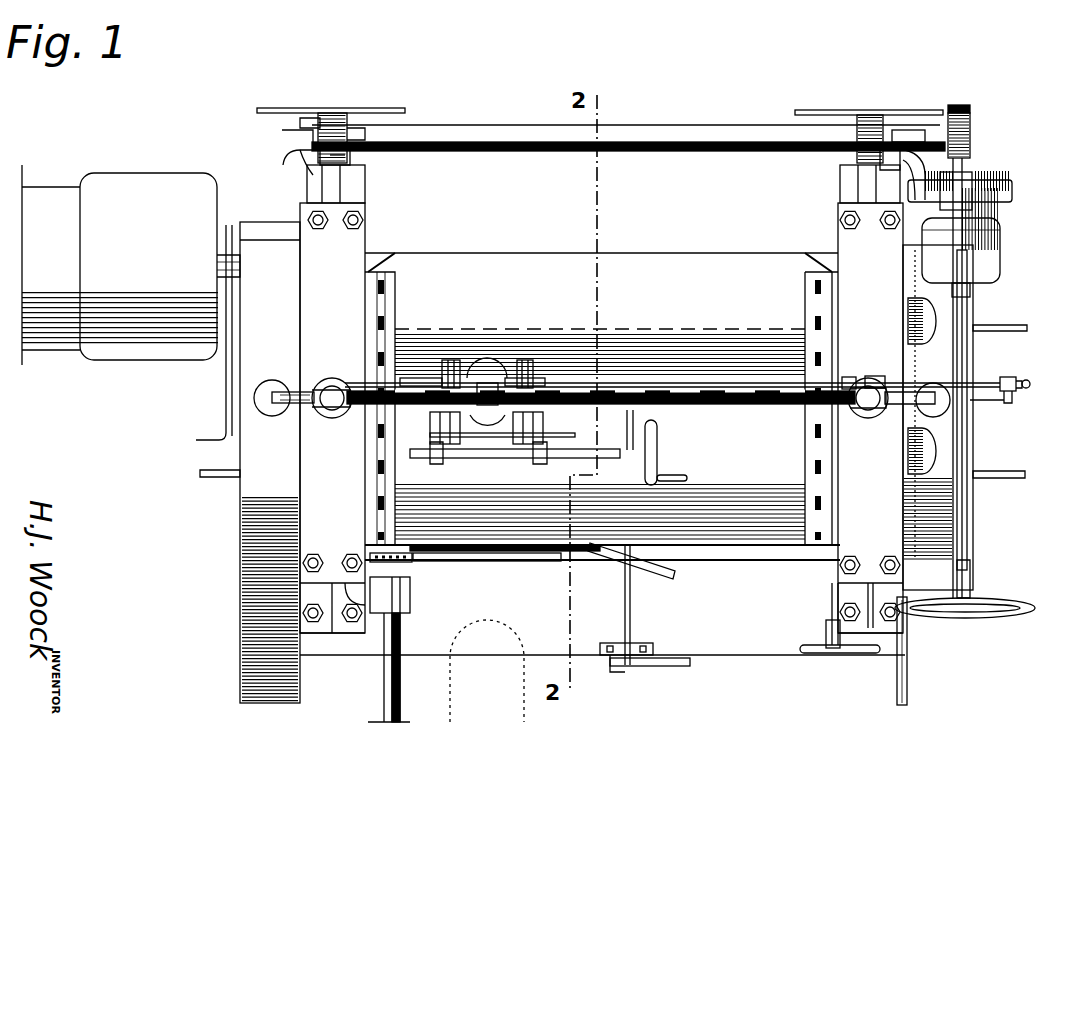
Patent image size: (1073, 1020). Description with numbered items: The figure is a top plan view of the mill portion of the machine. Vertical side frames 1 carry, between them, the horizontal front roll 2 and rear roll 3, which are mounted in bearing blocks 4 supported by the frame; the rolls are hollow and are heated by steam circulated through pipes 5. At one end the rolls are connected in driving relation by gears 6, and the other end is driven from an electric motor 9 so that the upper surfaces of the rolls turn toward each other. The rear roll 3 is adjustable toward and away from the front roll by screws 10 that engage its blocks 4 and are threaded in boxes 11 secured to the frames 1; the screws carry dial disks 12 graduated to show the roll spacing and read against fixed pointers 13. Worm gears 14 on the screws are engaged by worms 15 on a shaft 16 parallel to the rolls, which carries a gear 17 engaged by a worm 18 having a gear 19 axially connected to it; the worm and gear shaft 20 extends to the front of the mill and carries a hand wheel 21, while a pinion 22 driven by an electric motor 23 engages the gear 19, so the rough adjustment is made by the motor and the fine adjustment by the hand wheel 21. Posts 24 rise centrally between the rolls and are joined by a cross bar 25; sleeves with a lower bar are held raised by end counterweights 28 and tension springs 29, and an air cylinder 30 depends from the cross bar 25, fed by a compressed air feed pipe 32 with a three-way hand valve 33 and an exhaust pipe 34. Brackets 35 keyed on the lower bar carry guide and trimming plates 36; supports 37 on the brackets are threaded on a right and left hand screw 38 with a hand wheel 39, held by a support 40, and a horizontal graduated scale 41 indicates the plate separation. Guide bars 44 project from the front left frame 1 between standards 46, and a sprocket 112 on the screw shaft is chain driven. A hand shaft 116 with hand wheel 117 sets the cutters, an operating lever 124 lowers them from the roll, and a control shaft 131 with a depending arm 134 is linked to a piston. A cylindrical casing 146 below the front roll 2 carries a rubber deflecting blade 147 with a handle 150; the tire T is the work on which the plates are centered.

The vertical side frames 1 is at (308, 512).
The front roll 2 is at (727, 548).
The rear roll 3 is at (655, 265).
The bearing blocks 4 is at (362, 292).
The pipes 5 is at (197, 473).
The gears 6 is at (908, 325).
The electric motor 9 is at (135, 190).
The screws 10 is at (352, 162).
The boxes 11 is at (355, 195).
The dial disks 12 is at (278, 108).
The fixed pointers 13 is at (329, 113).
The worm gears 14 is at (352, 131).
The worms 15 is at (283, 150).
The shaft 16 is at (455, 142).
The gear 17 is at (959, 105).
The worm 18 is at (973, 135).
The gear 19 is at (1010, 185).
The worm and gear shaft 20 is at (967, 450).
The hand wheel 21 is at (987, 620).
The pinion 22 is at (973, 178).
The electric motor 23 is at (998, 267).
The posts 24 is at (333, 412).
The cross bar 25 is at (712, 405).
The end counterweights 28 is at (271, 416).
The tension springs 29 is at (370, 383).
The air cylinder 30 is at (478, 383).
The compressed air feed pipe 32 is at (846, 377).
The three-way hand valve 33 is at (1017, 387).
The exhaust pipe 34 is at (1027, 373).
The brackets 35 is at (440, 378).
The guide and trimming plates 36 is at (451, 360).
The supports 37 is at (430, 426).
The screw 38 is at (460, 458).
The hand wheel 39 is at (657, 458).
The support 40 is at (633, 428).
The horizontal graduated scale 41 is at (504, 437).
The guide bars 44 is at (390, 673).
The standards 46 is at (410, 610).
The sprocket 112 is at (408, 563).
The hand shaft 116 is at (835, 595).
The hand wheel 117 is at (808, 653).
The operating lever 124 is at (908, 687).
The control shaft 131 is at (632, 625).
The arm 134 is at (612, 670).
The cylindrical casing 146 is at (530, 560).
The rubber deflecting blade 147 is at (493, 562).
The handle 150 is at (655, 572).
The tray T is at (508, 638).